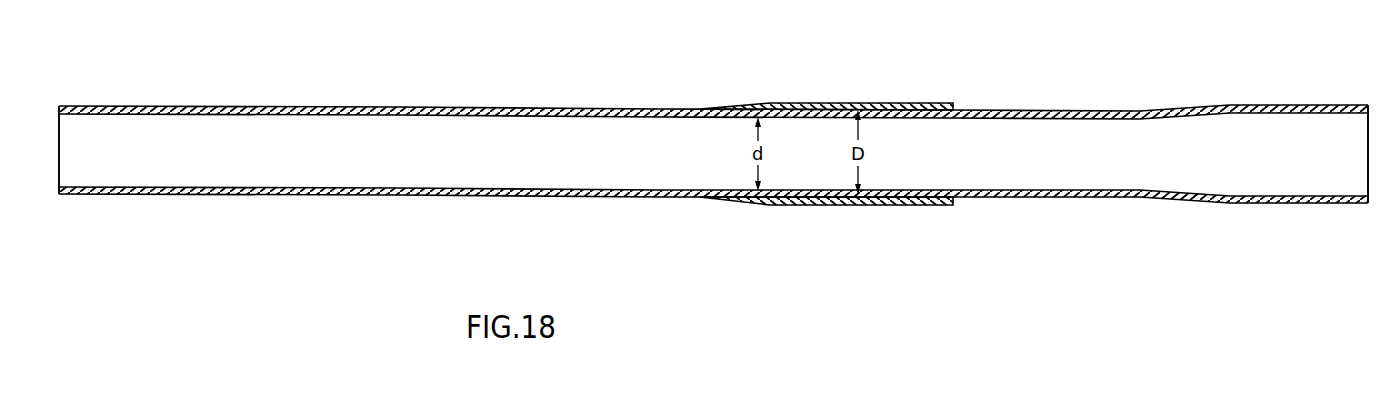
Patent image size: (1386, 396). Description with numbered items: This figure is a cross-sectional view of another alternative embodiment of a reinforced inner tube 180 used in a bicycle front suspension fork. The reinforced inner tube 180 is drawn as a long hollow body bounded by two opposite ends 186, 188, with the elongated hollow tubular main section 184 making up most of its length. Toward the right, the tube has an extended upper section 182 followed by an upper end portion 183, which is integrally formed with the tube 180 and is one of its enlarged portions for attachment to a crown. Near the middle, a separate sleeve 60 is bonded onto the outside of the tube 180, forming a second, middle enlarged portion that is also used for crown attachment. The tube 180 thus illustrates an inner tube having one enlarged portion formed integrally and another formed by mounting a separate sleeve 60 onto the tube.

The reinforced inner tube 180 is at (498, 83).
The sleeve 60 is at (838, 103).
The extended upper section 182 is at (1048, 198).
The upper end portion 183 is at (1268, 104).
The elongated hollow tubular main section 184 is at (450, 197).
The end 186 is at (1369, 178).
The end 188 is at (59, 178).